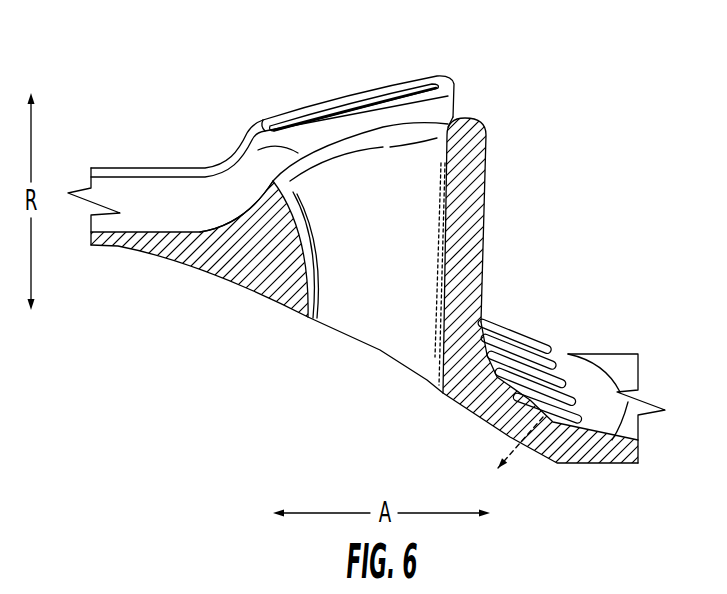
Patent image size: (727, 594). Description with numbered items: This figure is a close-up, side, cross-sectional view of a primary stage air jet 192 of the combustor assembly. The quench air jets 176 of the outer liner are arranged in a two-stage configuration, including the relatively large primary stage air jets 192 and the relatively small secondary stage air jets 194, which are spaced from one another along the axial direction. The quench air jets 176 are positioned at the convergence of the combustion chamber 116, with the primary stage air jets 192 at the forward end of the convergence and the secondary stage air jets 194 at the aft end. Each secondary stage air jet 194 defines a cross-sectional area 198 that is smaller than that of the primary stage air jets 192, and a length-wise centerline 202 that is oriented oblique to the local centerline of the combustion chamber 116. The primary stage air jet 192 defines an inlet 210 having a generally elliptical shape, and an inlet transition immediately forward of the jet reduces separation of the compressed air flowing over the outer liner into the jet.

The combustion chamber 116 is at (195, 333).
The quench air jets 176 is at (598, 152).
The primary stage air jets 192 is at (372, 77).
The secondary stage air jets 194 is at (555, 397).
The cross-sectional area 198 is at (235, 218).
The length-wise centerline 202 is at (518, 450).
The inlet 210 is at (432, 138).